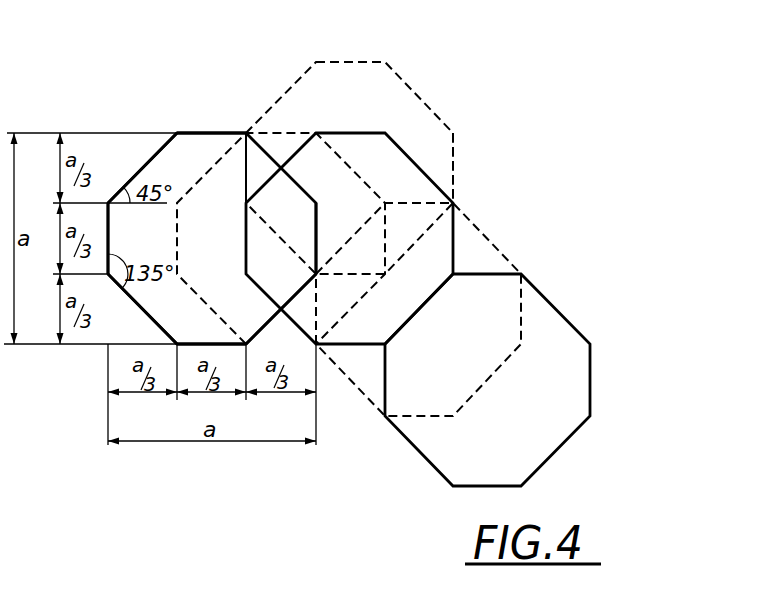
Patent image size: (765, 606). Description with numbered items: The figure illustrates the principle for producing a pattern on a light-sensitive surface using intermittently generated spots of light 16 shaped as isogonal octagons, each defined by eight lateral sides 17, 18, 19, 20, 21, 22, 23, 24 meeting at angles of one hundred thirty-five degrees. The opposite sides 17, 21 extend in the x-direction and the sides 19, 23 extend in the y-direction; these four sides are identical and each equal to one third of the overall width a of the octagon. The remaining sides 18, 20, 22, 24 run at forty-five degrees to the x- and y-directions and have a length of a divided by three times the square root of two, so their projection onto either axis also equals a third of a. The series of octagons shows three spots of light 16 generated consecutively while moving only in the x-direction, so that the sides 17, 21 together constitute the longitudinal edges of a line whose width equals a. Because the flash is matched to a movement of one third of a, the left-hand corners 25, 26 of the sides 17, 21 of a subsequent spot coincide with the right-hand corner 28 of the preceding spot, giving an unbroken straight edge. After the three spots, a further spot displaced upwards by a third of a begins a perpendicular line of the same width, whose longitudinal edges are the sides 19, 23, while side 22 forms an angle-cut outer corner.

The spot of light 16 is at (192, 124).
The side 17 is at (220, 133).
The side 18 is at (143, 167).
The side 19 is at (246, 168).
The side 20 is at (145, 313).
The side 21 is at (247, 347).
The side 22 is at (362, 318).
The side 23 is at (316, 230).
The side 24 is at (274, 160).
The left-hand corner 25 is at (177, 133).
The left-hand corner 26 is at (176, 346).
The right-hand corner 28 is at (247, 132).